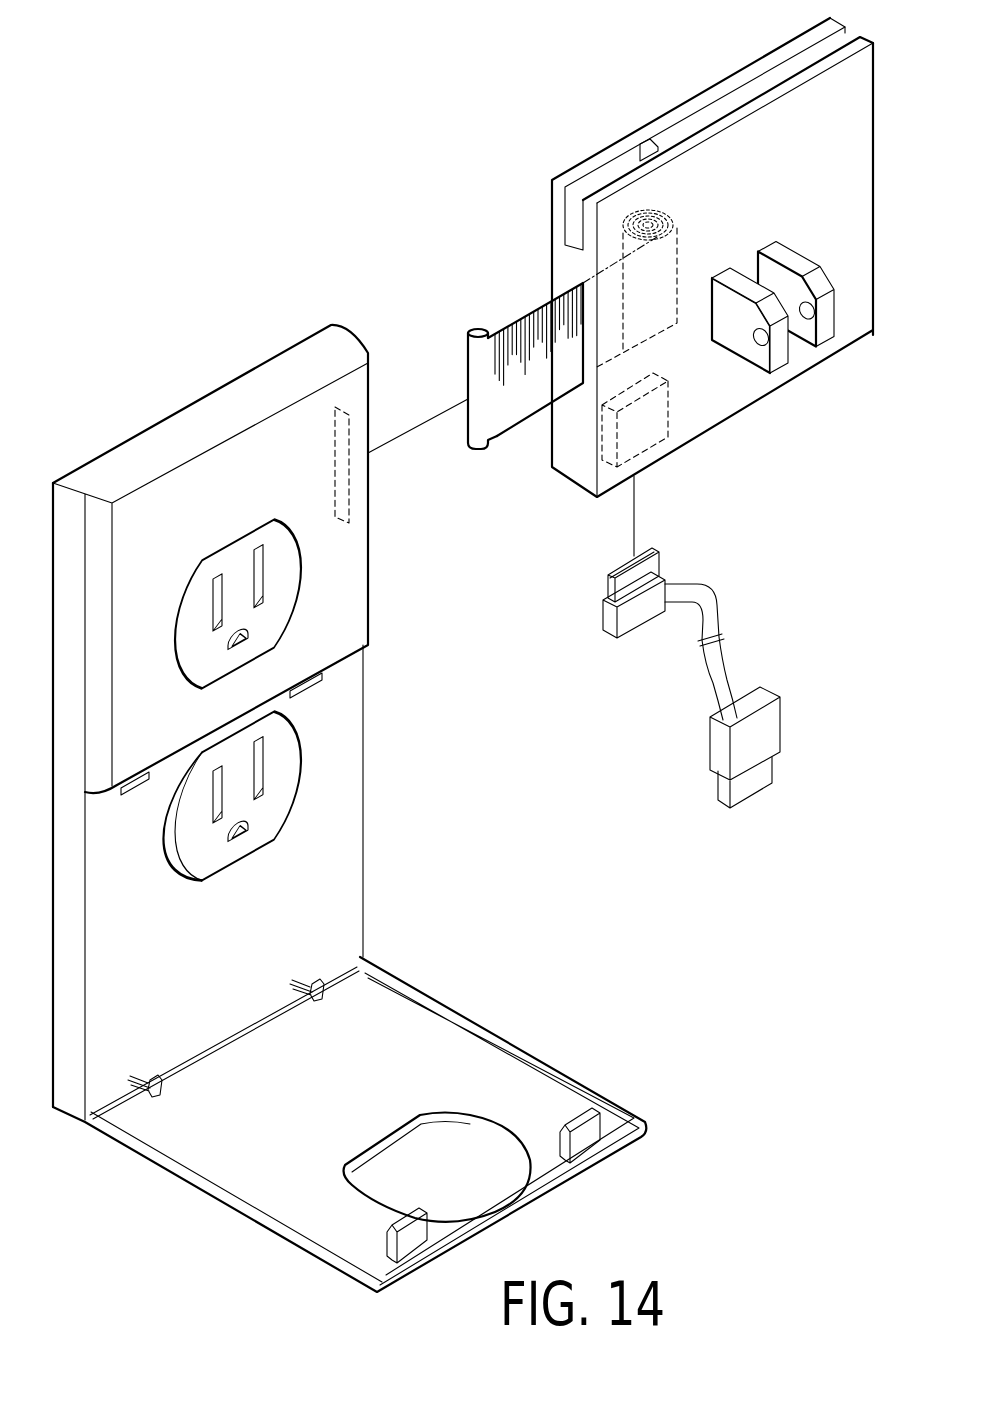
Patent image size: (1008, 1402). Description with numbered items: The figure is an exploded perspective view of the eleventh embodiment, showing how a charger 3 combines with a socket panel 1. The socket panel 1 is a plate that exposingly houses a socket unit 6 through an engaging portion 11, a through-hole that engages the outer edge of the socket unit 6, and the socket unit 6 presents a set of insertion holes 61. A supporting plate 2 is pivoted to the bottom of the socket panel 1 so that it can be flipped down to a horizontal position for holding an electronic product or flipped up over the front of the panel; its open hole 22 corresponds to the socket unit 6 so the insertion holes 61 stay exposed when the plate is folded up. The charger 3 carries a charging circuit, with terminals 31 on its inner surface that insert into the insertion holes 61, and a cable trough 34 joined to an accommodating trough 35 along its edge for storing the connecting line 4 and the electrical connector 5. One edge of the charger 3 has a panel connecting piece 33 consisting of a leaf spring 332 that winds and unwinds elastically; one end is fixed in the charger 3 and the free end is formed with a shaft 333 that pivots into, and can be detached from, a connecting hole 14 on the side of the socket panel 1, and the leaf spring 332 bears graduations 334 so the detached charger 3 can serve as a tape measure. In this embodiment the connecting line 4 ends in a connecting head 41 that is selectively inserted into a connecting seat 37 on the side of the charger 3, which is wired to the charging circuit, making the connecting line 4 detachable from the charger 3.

The socket panel 1 is at (143, 435).
The connecting hole 14 is at (349, 437).
The socket unit 6 is at (190, 594).
The engaging portion 11 is at (222, 547).
The insertion holes 61 is at (264, 566).
The supporting plate 2 is at (621, 1100).
The open hole 22 is at (495, 1120).
The charger 3 is at (558, 173).
The cable trough 34 is at (715, 108).
The accommodating trough 35 is at (606, 175).
The terminals 31 is at (766, 356).
The connecting seat 37 is at (668, 410).
The panel connecting piece 33 is at (515, 397).
The leaf spring 332 is at (505, 413).
The shaft 333 is at (483, 458).
The graduations 334 is at (524, 378).
The connecting head 41 is at (606, 618).
The connecting line 4 is at (715, 679).
The electrical connector 5 is at (710, 752).